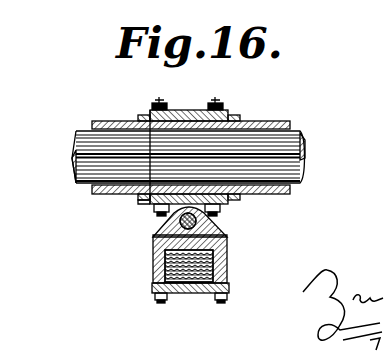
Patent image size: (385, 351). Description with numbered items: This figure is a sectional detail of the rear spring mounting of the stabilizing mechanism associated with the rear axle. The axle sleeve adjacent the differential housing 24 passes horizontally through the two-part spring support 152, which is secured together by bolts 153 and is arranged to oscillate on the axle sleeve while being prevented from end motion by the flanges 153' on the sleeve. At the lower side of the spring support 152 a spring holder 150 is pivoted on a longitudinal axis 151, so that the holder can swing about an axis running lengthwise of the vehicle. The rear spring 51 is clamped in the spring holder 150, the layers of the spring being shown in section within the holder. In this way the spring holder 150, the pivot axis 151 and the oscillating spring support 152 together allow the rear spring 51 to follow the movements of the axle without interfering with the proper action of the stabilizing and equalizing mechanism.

The differential housing 24 is at (280, 121).
The bolts 153 is at (182, 142).
The flanges 153' is at (221, 128).
The spring supports 152 is at (153, 204).
The longitudinal axes 151 is at (208, 223).
The spring holders 150 is at (227, 246).
The rear springs 51 is at (212, 268).